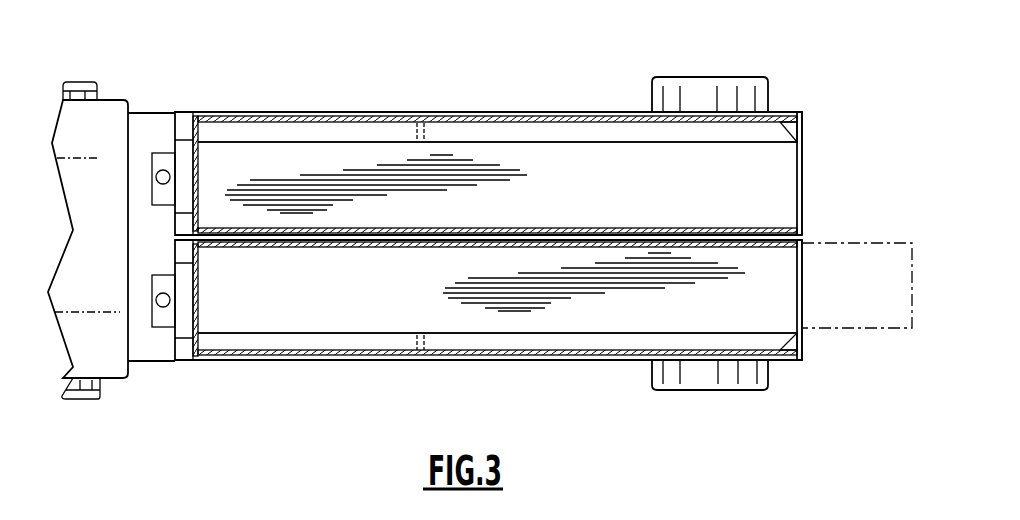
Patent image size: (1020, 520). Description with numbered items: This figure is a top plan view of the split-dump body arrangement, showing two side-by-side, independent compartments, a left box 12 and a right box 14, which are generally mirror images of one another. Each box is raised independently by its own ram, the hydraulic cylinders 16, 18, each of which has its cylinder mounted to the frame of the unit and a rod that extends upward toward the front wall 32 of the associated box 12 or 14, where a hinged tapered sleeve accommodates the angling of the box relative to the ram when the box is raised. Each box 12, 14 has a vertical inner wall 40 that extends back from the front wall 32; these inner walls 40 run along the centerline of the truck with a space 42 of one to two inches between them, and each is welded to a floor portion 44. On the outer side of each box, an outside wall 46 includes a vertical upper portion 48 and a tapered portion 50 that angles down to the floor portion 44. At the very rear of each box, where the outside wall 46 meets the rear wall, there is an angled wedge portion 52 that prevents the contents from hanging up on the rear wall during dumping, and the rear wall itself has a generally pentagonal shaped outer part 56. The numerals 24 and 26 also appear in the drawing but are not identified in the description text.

The left box 12 is at (410, 374).
The right box 14 is at (619, 109).
The hydraulic cylinder 16 is at (156, 300).
The hydraulic cylinder 18 is at (156, 177).
The end connector body 24 is at (101, 111).
The mating connector 26 is at (803, 183).
The front wall 32 is at (198, 180).
The vertical inner wall 40 is at (441, 229).
The space 42 is at (644, 232).
The floor portion 44 is at (582, 196).
The outside wall 46 is at (452, 113).
The vertical upper portion 48 is at (382, 125).
The tapered portion 50 is at (483, 130).
The wedge portion 52 is at (789, 129).
The pentagonal shaped outer part 56 is at (803, 131).